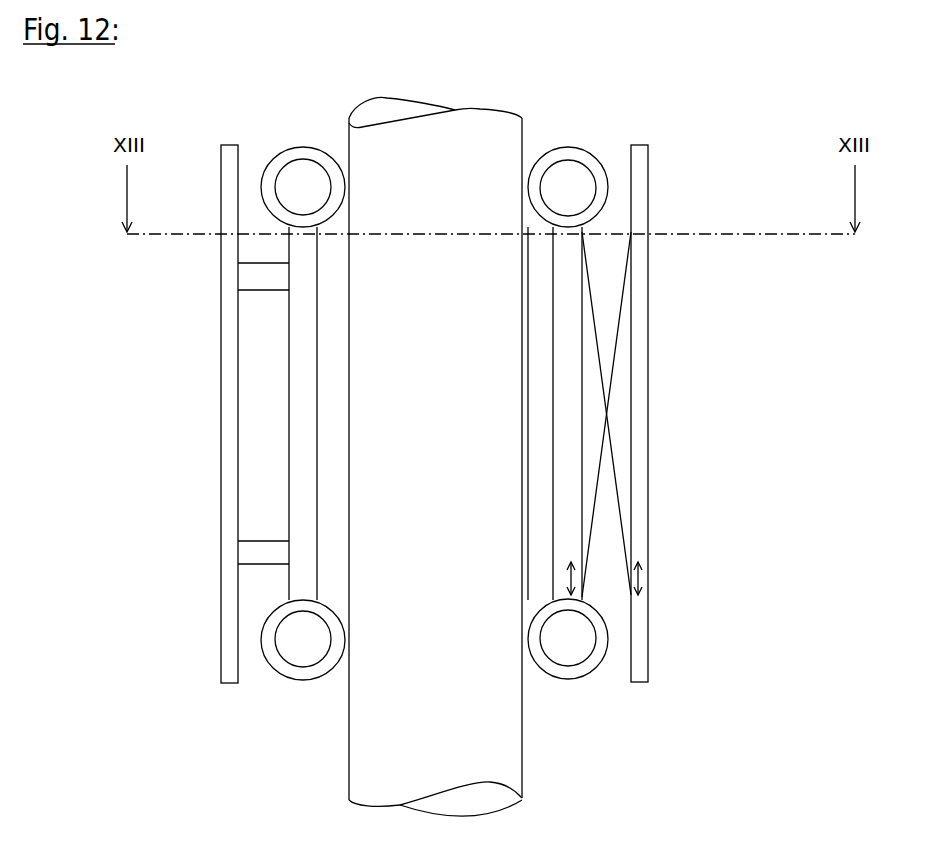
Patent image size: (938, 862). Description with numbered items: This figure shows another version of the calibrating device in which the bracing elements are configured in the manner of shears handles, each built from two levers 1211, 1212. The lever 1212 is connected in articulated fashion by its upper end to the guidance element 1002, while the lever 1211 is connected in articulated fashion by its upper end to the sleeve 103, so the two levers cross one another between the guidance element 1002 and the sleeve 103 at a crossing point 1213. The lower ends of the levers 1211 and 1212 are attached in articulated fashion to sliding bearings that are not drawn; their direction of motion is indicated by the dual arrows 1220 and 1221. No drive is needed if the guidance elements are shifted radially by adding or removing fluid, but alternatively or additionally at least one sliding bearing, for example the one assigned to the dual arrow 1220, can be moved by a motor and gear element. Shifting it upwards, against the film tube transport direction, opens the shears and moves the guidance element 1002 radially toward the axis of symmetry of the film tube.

The guidance element 1002 is at (578, 132).
The sleeve 103 is at (640, 453).
The lever 1212 is at (592, 307).
The lever 1211 is at (612, 362).
The crossing point of struts 1213 is at (605, 407).
The dual arrow 1220 is at (645, 573).
The dual arrow 1221 is at (577, 592).